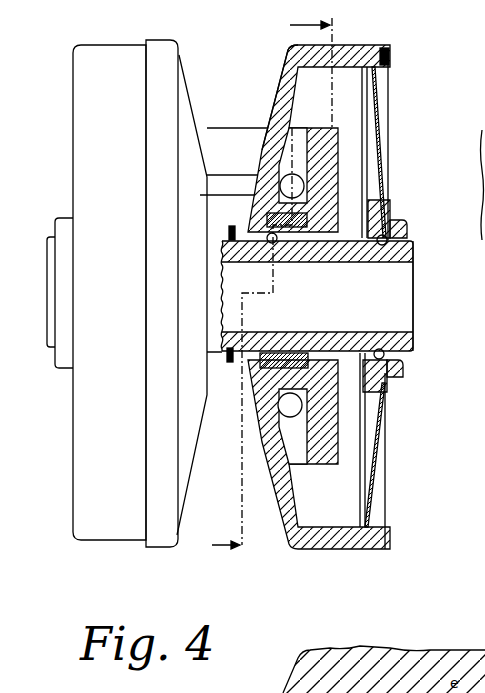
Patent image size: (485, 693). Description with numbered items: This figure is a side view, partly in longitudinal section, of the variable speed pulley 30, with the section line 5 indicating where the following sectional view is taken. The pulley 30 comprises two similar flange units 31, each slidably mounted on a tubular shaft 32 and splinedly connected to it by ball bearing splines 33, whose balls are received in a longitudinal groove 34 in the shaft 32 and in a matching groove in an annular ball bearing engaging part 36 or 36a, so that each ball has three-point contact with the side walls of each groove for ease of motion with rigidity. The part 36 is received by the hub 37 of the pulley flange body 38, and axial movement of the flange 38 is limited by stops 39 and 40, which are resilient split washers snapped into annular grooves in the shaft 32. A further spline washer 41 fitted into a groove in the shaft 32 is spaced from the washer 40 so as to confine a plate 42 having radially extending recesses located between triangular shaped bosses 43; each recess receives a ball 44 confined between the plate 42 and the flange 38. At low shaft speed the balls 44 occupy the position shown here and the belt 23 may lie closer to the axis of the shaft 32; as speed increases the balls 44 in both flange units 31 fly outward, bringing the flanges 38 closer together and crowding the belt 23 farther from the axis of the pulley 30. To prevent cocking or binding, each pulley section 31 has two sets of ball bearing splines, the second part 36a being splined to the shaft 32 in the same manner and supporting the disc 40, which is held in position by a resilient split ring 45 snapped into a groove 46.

The belt 23 is at (227, 127).
The pulley 30 is at (235, 45).
The flange unit 31 is at (88, 50).
The tubular shaft 32 is at (48, 240).
The ball bearing splines 33 is at (267, 234).
The longitudinal groove 34 is at (413, 345).
The ball bearing engaging part 36 is at (268, 200).
The ball bearing engaging part 36a is at (407, 226).
The hub 37 is at (217, 196).
The pulley flange body 38 is at (178, 115).
The stop 39 is at (229, 230).
The stop 40 is at (380, 138).
The spline washer 41 is at (390, 57).
The plate 42 is at (318, 362).
The triangular shaped bosses 43 is at (283, 178).
The ball 44 is at (293, 173).
The resilient split ring 45 is at (377, 78).
The groove 46 is at (382, 50).
The section line 5- 5 is at (266, 296).